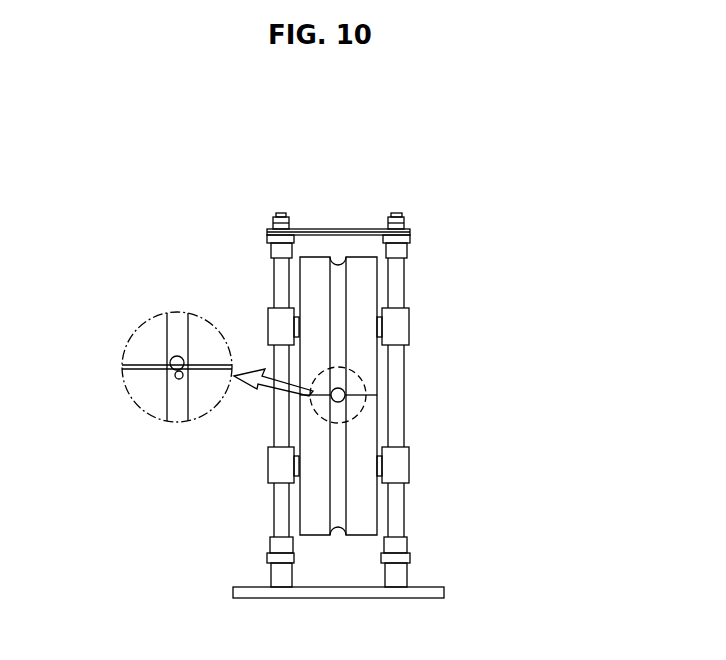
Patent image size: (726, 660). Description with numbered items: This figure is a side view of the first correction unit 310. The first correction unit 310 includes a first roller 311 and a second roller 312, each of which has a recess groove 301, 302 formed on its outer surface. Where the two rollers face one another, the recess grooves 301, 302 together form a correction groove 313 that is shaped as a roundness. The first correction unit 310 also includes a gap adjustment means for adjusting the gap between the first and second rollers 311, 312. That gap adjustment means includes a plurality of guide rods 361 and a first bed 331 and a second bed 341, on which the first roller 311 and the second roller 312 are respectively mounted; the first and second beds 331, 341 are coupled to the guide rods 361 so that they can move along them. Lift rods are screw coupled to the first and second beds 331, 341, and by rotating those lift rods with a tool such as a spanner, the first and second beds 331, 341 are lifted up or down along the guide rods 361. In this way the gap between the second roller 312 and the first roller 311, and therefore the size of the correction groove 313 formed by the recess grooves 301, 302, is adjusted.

The first correction unit 310 is at (494, 195).
The first roller 311 is at (313, 282).
The second roller 312 is at (313, 512).
The recess groove 301 is at (176, 356).
The recess groove 302 is at (183, 380).
The correction groove 313 is at (178, 380).
The first bed 331 is at (407, 325).
The second bed 341 is at (407, 465).
The guide rods 361 is at (402, 395).